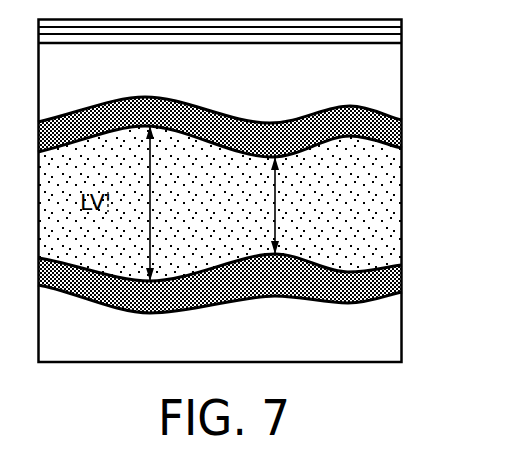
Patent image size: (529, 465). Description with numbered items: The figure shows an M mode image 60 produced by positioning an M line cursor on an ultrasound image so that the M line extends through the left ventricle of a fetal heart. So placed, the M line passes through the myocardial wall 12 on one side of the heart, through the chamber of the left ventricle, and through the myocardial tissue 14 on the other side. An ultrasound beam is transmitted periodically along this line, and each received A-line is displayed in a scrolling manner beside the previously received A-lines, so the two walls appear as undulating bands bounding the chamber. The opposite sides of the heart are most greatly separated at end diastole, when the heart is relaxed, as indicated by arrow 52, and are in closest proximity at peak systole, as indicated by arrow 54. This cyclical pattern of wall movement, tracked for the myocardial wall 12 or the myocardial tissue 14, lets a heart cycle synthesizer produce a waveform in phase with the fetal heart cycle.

The myocardial wall 12 is at (402, 131).
The myocardial tissue 14 is at (402, 275).
The M mode image 60 is at (402, 199).
The arrow indicating end diastole separation 52 is at (212, 192).
The arrow indicating peak systole proximity 54 is at (336, 185).